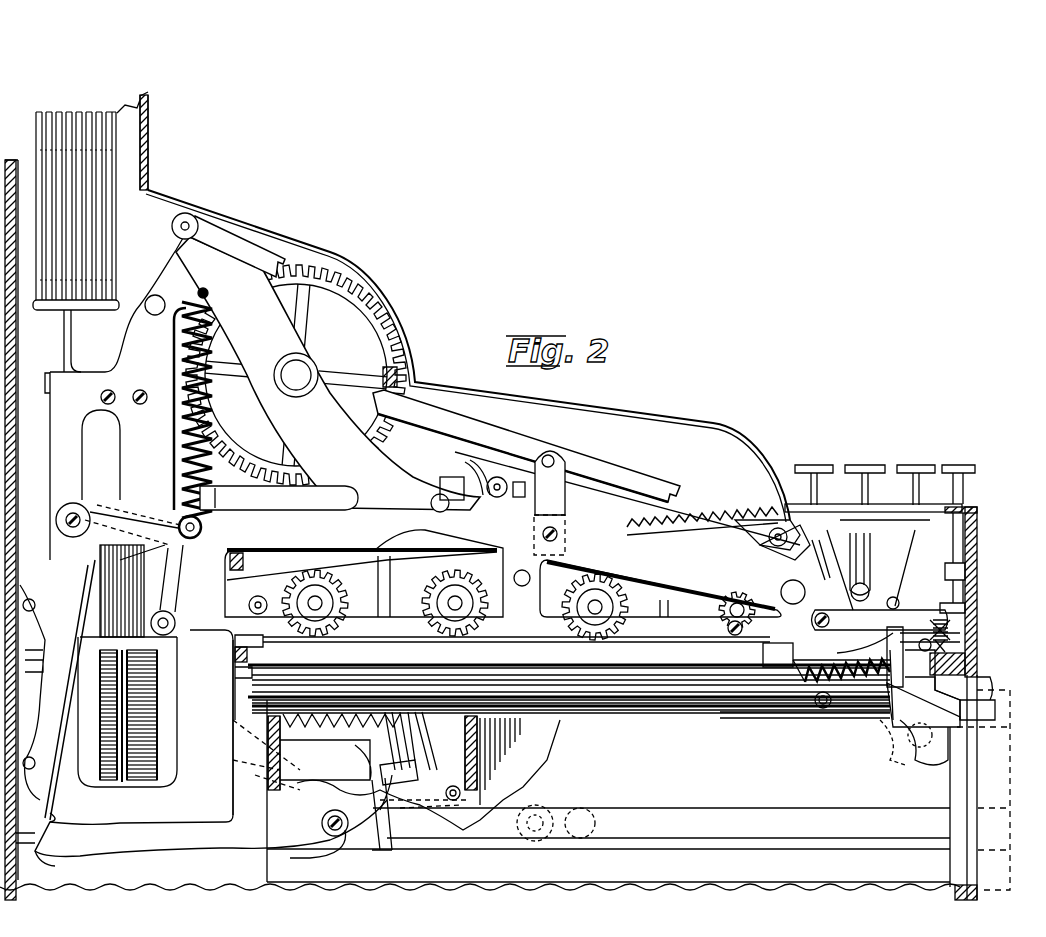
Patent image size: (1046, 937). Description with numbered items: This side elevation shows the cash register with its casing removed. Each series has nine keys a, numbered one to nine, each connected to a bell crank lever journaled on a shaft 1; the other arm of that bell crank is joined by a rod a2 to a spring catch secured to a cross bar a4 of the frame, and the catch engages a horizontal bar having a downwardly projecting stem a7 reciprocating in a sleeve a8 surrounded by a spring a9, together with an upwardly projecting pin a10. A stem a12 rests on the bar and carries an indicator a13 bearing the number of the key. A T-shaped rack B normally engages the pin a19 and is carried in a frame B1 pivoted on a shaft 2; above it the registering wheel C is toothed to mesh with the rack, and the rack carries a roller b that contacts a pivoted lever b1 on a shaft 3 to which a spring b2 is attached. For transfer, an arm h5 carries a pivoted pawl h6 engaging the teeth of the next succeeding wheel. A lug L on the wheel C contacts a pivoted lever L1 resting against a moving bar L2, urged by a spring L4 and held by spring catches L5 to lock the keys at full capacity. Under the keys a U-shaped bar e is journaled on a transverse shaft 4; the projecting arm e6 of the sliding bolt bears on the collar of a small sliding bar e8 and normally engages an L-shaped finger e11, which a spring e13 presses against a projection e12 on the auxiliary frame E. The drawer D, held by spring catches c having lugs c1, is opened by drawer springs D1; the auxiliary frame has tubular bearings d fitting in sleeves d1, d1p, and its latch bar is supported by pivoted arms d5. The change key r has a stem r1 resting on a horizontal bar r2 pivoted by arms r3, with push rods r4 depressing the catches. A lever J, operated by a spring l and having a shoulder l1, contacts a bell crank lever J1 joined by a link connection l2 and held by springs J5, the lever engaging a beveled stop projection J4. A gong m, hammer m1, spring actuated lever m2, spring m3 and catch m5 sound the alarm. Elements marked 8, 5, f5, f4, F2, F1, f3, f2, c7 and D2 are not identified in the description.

The indicator a13 is at (75, 205).
The indicator stem a12 is at (66, 337).
The lever J is at (195, 832).
The beveled stop projection J4 is at (55, 866).
The bell-crank lever J1 is at (30, 650).
The springs J5 is at (172, 382).
The pin a19 is at (97, 490).
The T-shaped rack B is at (132, 511).
The upwardly projecting pin a10 is at (157, 548).
The cross bar a4 is at (128, 592).
The tube or sleeve a8 is at (160, 705).
The spring a9 is at (160, 732).
The shoulder l1 is at (65, 822).
The link connection l2 is at (185, 560).
The spring l is at (345, 840).
The arm h5 is at (148, 285).
The registering wheel C is at (357, 305).
The pivoted pawl h6 is at (240, 250).
The hub 8 is at (296, 375).
The spring 5 is at (209, 414).
The shaft 2 is at (431, 503).
The shaft 3 is at (521, 568).
The shaft 1 is at (781, 590).
The rack frame B1 is at (328, 505).
The rod f5 is at (255, 550).
The frame bar f4 is at (352, 560).
The rod a2 is at (725, 545).
The downwardly projecting stem a7 is at (780, 545).
The pinions F2 is at (725, 600).
The pinion hubs F1 is at (737, 627).
The bearings f3 is at (375, 620).
The pin f2 is at (255, 616).
The arms d5 is at (770, 612).
The lug or projection L is at (397, 393).
The pivoted lever L1 is at (448, 428).
The roller b is at (496, 484).
The pivoted lever b1 is at (462, 480).
The spring b2 is at (735, 520).
The spring L4 is at (703, 540).
The moving bar L2 is at (780, 525).
The spring catches L5 is at (826, 570).
The keys a is at (880, 468).
The drawer opening key r is at (958, 465).
The stem r1 is at (980, 545).
The arms r3 is at (880, 575).
The U-shaped bar or frame e is at (868, 598).
The transverse shaft 4 is at (895, 600).
The L-shaped finger e11 is at (893, 643).
The projecting arm e6 is at (950, 633).
The sliding bar e8 is at (950, 645).
The block c7 is at (965, 655).
The horizontal bar r2 is at (965, 615).
The auxiliary frame E is at (978, 698).
The spring-catches c is at (955, 728).
The projection e12 is at (1010, 727).
The push rod r4 is at (930, 745).
The projecting lug c1 is at (955, 730).
The spring e13 is at (918, 720).
The tubes or sleeves d1 is at (755, 700).
The tubular bearings d is at (822, 700).
The tubes or sleeves d1p is at (870, 700).
The drawer D is at (845, 683).
The drawer springs D1 is at (905, 703).
The gong m is at (270, 732).
The toothed sector D2 is at (340, 747).
The spring m3 is at (380, 740).
The hammer m1 is at (425, 745).
The spring actuated lever m2 is at (415, 768).
The spring actuated catch m5 is at (405, 788).